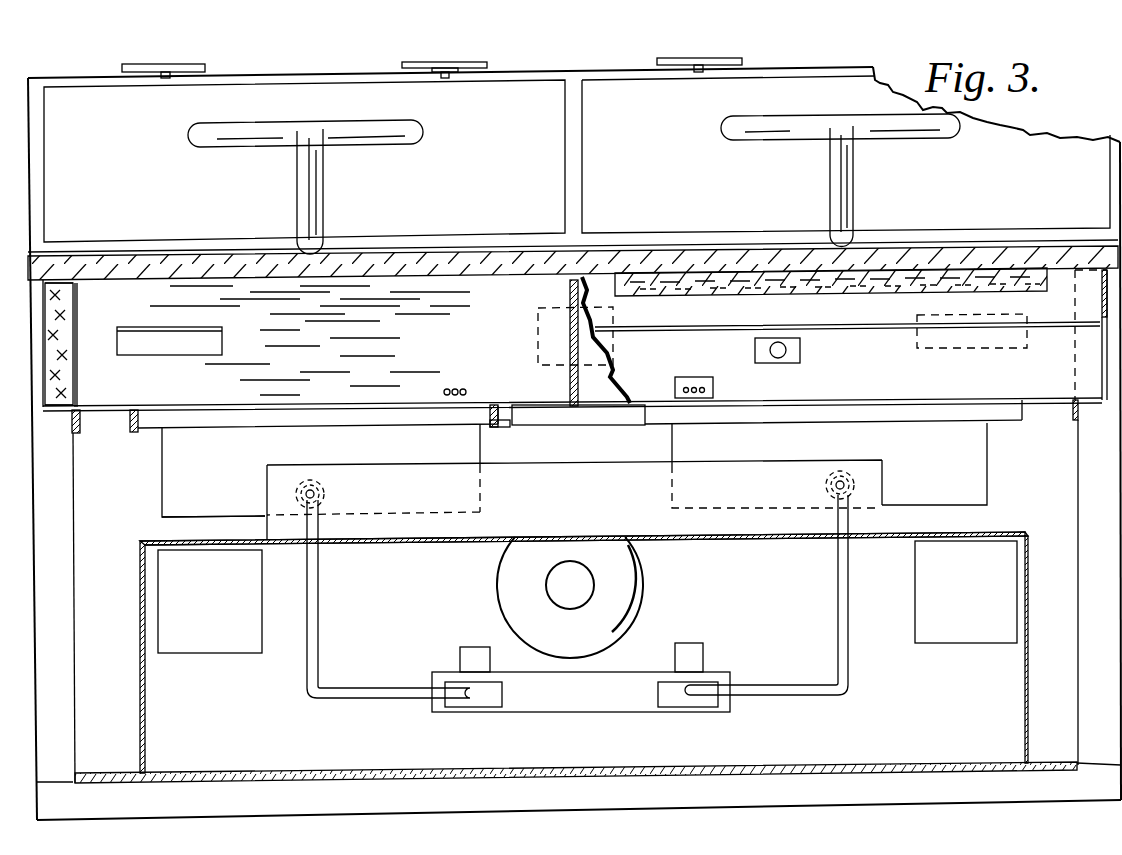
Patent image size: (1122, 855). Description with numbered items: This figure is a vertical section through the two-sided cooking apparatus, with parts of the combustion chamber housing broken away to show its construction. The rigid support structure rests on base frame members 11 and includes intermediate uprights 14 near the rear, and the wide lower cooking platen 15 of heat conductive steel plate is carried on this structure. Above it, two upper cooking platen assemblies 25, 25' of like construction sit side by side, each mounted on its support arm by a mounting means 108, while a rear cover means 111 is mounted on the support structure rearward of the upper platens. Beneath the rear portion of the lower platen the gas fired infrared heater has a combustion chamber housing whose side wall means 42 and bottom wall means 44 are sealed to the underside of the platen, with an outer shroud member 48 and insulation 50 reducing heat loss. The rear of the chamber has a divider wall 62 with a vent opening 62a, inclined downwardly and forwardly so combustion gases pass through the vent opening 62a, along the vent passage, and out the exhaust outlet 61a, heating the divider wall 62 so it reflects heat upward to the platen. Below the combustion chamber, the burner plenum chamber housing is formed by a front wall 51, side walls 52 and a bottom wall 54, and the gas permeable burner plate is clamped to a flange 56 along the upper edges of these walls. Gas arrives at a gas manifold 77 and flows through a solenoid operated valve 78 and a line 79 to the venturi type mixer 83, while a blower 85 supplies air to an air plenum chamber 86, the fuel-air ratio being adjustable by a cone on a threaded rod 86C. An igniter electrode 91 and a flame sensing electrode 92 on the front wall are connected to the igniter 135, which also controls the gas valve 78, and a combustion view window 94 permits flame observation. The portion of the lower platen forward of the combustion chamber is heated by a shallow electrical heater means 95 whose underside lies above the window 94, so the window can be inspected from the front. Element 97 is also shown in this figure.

The base frame members 11 is at (875, 782).
The intermediate uprights 14 is at (1087, 459).
The lower cooking platen 15 is at (586, 264).
The upper cooking platen assembly 25 is at (331, 146).
The upper cooking platen assembly 25' is at (846, 142).
The side wall means 42 is at (75, 367).
The bottom wall means 44 is at (523, 400).
The outer shroud member 48 is at (63, 327).
The insulation 50 is at (75, 332).
The front wall 51 is at (173, 478).
The side walls 52 is at (162, 450).
The bottom wall 54 is at (235, 483).
The flange 56 is at (257, 432).
The exhaust outlet 61a is at (538, 313).
The divider wall 62 is at (382, 287).
The vent opening 62a is at (222, 340).
The gas manifold 77 is at (548, 680).
The solenoid operated valve 78 is at (500, 706).
The line 79 is at (318, 599).
The venturi type mixer 83 is at (326, 490).
The blower 85 is at (633, 588).
The air plenum chamber 86 is at (580, 470).
The threaded rod 86C is at (305, 483).
The igniter electrode 91 is at (440, 392).
The flame sensing electrode 92 is at (465, 388).
The combustion view window 94 is at (783, 357).
The electrical heater means 95 is at (850, 293).
The sensor 97 is at (838, 328).
The mounting means 108 is at (467, 60).
The rear cover means 111 is at (287, 66).
The igniter 135 is at (239, 628).